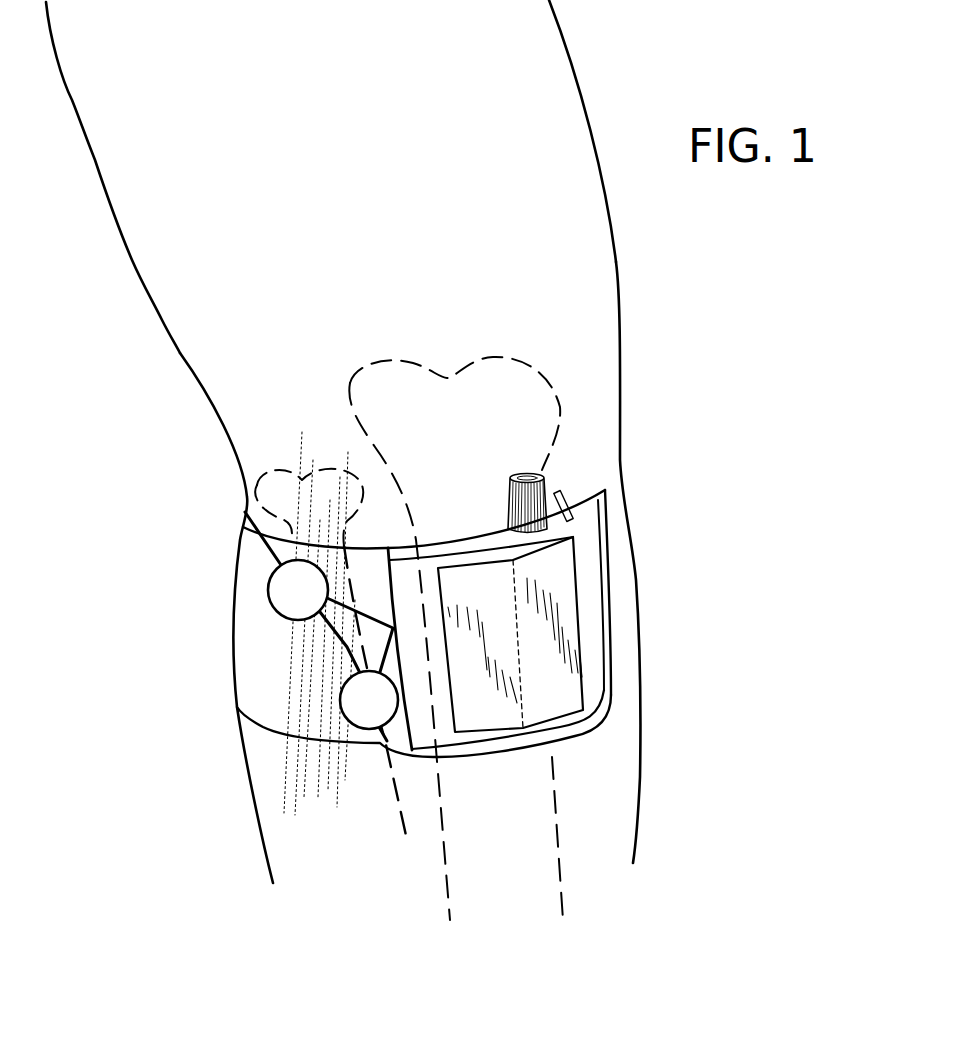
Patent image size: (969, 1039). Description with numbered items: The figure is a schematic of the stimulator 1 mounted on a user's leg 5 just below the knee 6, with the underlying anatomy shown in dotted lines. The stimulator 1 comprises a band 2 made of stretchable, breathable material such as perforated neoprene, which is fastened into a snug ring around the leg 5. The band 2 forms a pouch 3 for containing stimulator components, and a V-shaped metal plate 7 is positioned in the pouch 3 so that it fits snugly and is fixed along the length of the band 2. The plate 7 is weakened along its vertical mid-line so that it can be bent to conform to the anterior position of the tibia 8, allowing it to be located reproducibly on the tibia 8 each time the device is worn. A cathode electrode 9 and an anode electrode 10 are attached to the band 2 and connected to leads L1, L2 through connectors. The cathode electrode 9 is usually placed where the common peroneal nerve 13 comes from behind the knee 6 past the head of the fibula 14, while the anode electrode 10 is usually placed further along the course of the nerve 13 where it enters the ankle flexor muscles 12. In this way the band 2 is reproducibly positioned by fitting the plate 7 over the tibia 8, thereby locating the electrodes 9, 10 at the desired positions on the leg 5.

The stimulator 1 is at (690, 571).
The band 2 is at (640, 535).
The pouch 3 is at (612, 690).
The leg 5 is at (582, 97).
The knee 6 is at (622, 313).
The V-shaped metal plate 7 is at (573, 638).
The tibia 8 is at (353, 382).
The cathode electrode 9 is at (288, 608).
The anode electrode 10 is at (386, 717).
The ankle flexor muscles 12 is at (290, 772).
The common peroneal nerve 13 is at (395, 807).
The head of the fibula 14 is at (260, 484).
The lead L1 is at (360, 613).
The lead L2 is at (350, 650).